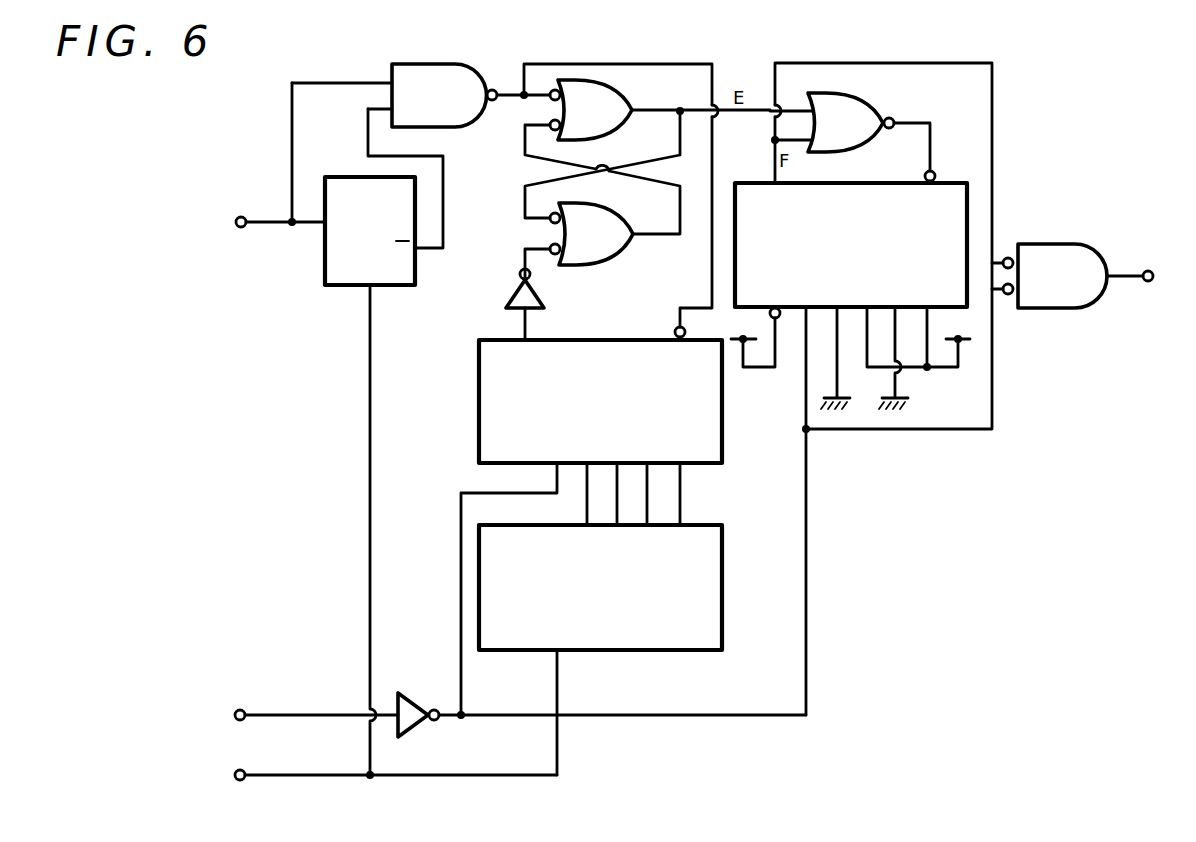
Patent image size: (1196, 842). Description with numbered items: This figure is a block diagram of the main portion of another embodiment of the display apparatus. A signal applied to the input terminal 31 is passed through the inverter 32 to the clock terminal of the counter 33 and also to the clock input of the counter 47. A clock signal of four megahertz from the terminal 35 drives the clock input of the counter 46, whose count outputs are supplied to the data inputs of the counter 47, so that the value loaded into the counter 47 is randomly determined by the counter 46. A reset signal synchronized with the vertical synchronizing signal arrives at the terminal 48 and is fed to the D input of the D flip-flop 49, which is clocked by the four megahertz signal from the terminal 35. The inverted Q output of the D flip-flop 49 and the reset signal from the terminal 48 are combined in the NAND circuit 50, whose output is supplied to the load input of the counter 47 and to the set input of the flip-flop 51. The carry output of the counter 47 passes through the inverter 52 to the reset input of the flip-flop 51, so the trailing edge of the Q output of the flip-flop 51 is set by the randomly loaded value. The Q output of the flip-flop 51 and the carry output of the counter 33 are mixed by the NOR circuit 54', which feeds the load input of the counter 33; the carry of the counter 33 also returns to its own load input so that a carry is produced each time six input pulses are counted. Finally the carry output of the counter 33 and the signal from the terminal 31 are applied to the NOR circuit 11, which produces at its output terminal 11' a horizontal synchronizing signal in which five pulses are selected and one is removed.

The gate circuit (NOR circuit) 11 is at (1073, 309).
The output terminal 11' is at (1154, 307).
The input terminal 31 is at (235, 716).
The inverter 32 is at (416, 731).
The counter 33 is at (877, 176).
The terminal 35 is at (235, 776).
The counter 46 is at (722, 600).
The counter 47 is at (479, 418).
The terminal 48 is at (237, 226).
The D flip-flop 49 is at (390, 286).
The NAND circuit 50 is at (477, 126).
The flip-flop 51 is at (525, 163).
The inverter 52 is at (541, 293).
The NOR circuit 54' is at (852, 129).